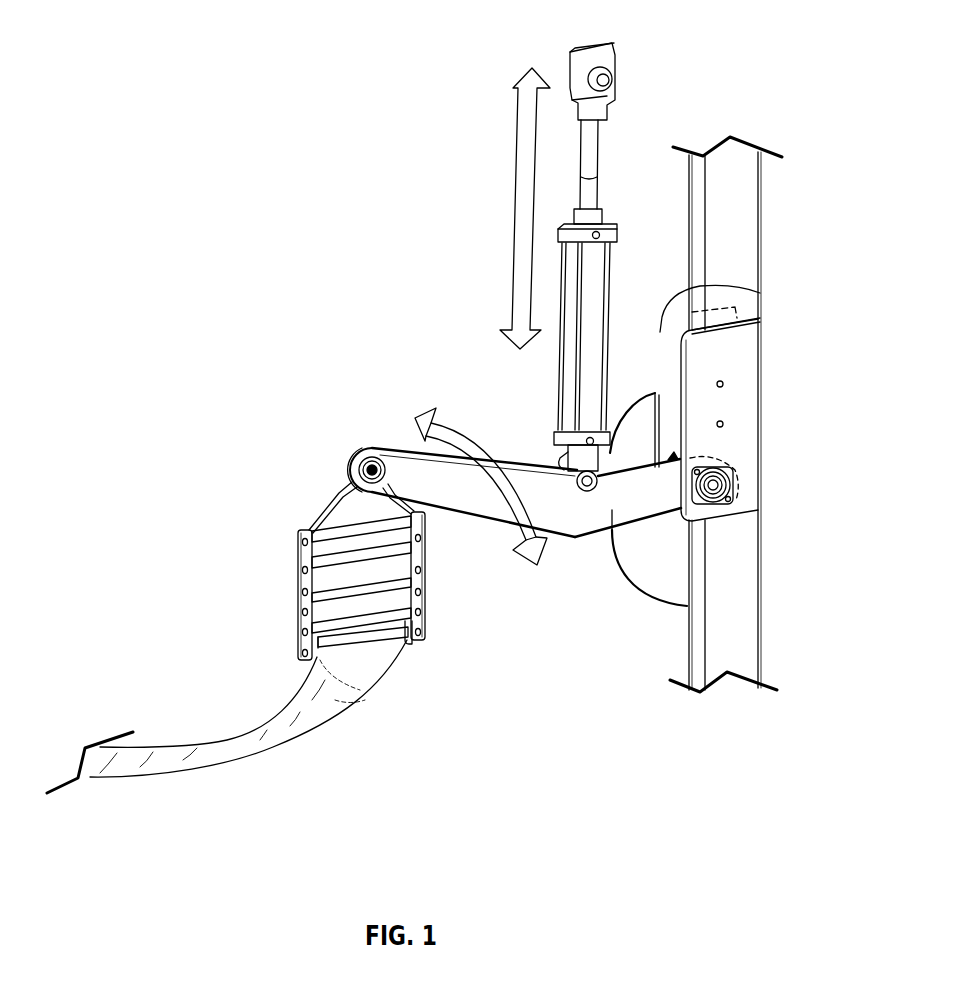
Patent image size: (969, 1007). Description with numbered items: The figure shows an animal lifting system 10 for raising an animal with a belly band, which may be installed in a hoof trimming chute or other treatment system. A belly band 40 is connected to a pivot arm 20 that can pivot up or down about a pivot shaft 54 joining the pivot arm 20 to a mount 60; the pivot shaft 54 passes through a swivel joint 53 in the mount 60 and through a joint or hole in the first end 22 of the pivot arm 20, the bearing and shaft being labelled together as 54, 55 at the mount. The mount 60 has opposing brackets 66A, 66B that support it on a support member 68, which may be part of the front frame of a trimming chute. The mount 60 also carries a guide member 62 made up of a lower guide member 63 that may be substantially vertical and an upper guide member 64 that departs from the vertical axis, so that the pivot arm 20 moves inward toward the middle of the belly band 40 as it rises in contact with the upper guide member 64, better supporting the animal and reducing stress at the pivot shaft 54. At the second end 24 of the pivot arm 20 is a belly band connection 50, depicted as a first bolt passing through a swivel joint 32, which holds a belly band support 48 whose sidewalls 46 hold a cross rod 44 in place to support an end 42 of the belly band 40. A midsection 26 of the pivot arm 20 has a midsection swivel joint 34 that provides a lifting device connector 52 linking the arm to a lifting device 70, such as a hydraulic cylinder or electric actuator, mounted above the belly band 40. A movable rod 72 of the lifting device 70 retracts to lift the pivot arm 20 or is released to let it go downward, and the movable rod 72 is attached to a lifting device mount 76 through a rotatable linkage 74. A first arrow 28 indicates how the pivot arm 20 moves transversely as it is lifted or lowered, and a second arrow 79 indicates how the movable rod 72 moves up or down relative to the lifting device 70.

The animal lifting system 10 is at (158, 128).
The pivot arm 20 is at (558, 520).
The first end of the pivot arm 22 is at (740, 468).
The second end of the pivot arm 24 is at (347, 462).
The midsection of the pivot arm 26 is at (576, 470).
The first arrow 28 is at (428, 398).
The swivel joint 32 is at (371, 452).
The midsection swivel joint 34 is at (573, 470).
The belly band 40 is at (337, 710).
The end of the belly band 42 is at (400, 640).
The cross rod 44 is at (417, 608).
The sidewalls 46 is at (299, 596).
The belly band support 48 is at (350, 507).
The belly band connection 50 is at (360, 456).
The lifting device connector 52 is at (570, 458).
The swivel joint 53 is at (733, 500).
The pivot shaft 54 is at (722, 486).
The shaft 55 is at (722, 486).
The mount 60 is at (727, 350).
The guide member 62 is at (647, 563).
The lower guide member 63 is at (647, 530).
The upper guide member 64 is at (637, 433).
The bracket 66A is at (740, 285).
The bracket 66B is at (748, 336).
The support member 68 is at (742, 222).
The lifting device 70 is at (572, 396).
The movable rod 72 is at (592, 192).
The rotatable linkage 74 is at (612, 79).
The lifting device mount 76 is at (608, 52).
The second arrow 79 is at (522, 212).